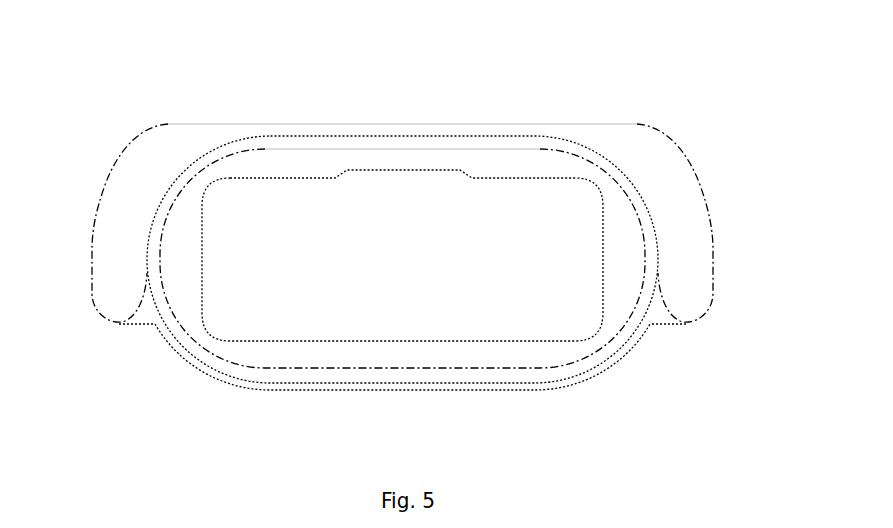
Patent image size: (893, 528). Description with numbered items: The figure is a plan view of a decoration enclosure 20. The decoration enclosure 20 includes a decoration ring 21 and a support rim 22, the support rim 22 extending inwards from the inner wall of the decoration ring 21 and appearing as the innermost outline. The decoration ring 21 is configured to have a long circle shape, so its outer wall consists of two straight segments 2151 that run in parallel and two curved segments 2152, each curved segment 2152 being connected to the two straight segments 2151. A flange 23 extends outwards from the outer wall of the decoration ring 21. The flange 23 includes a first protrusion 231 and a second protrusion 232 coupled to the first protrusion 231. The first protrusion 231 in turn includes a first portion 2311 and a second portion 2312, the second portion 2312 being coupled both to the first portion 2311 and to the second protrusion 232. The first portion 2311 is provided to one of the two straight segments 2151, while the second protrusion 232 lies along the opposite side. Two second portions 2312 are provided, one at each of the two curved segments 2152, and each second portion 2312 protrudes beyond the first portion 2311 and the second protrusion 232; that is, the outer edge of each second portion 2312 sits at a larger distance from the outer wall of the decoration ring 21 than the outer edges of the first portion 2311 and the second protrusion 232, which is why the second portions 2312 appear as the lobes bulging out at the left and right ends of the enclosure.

The decoration enclosure 20 is at (313, 74).
The decoration ring 21 is at (557, 143).
The support rim 22 is at (495, 160).
The flange 23 is at (102, 255).
The first protrusion 231 is at (102, 72).
The first portion 2311 is at (267, 129).
The second portion 2312 is at (127, 168).
The second protrusion 232 is at (262, 392).
The straight segments 2151 is at (398, 136).
The curved segments 2152 is at (119, 324).